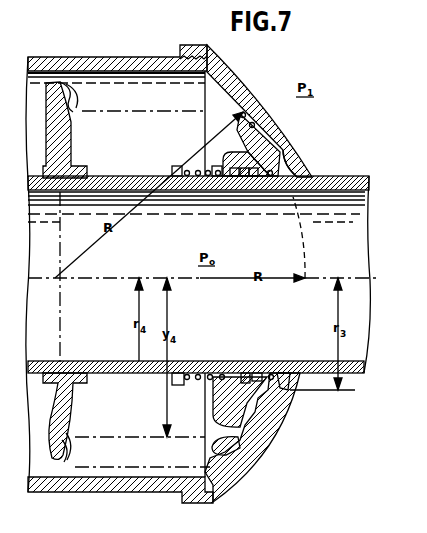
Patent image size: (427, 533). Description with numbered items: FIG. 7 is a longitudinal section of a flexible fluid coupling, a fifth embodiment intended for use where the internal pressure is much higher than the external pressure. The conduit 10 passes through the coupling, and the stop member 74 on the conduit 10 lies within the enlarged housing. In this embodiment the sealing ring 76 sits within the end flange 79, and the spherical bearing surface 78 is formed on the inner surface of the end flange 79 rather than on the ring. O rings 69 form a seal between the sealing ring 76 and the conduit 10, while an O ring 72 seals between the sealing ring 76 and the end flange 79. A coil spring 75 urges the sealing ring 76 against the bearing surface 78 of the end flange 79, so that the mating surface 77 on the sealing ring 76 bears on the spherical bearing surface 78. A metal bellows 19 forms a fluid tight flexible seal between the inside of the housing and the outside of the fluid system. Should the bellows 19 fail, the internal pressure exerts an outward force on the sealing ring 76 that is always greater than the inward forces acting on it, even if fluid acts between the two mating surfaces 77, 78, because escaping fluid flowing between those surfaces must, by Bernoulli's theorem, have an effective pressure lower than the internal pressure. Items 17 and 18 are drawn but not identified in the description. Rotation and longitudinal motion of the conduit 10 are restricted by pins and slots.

The conduit 10 is at (338, 176).
The retaining bracket 17 is at (72, 150).
The housing plate 18 is at (65, 81).
The bellows 19 is at (82, 104).
The O rings 69 is at (223, 166).
The O ring 72 is at (272, 432).
The stop member 74 is at (180, 165).
The coil spring 75 is at (197, 385).
The sealing ring 76 is at (280, 167).
The mating surface 77 is at (258, 131).
The spherical bearing surface 78 is at (250, 114).
The end flange 79 is at (245, 88).